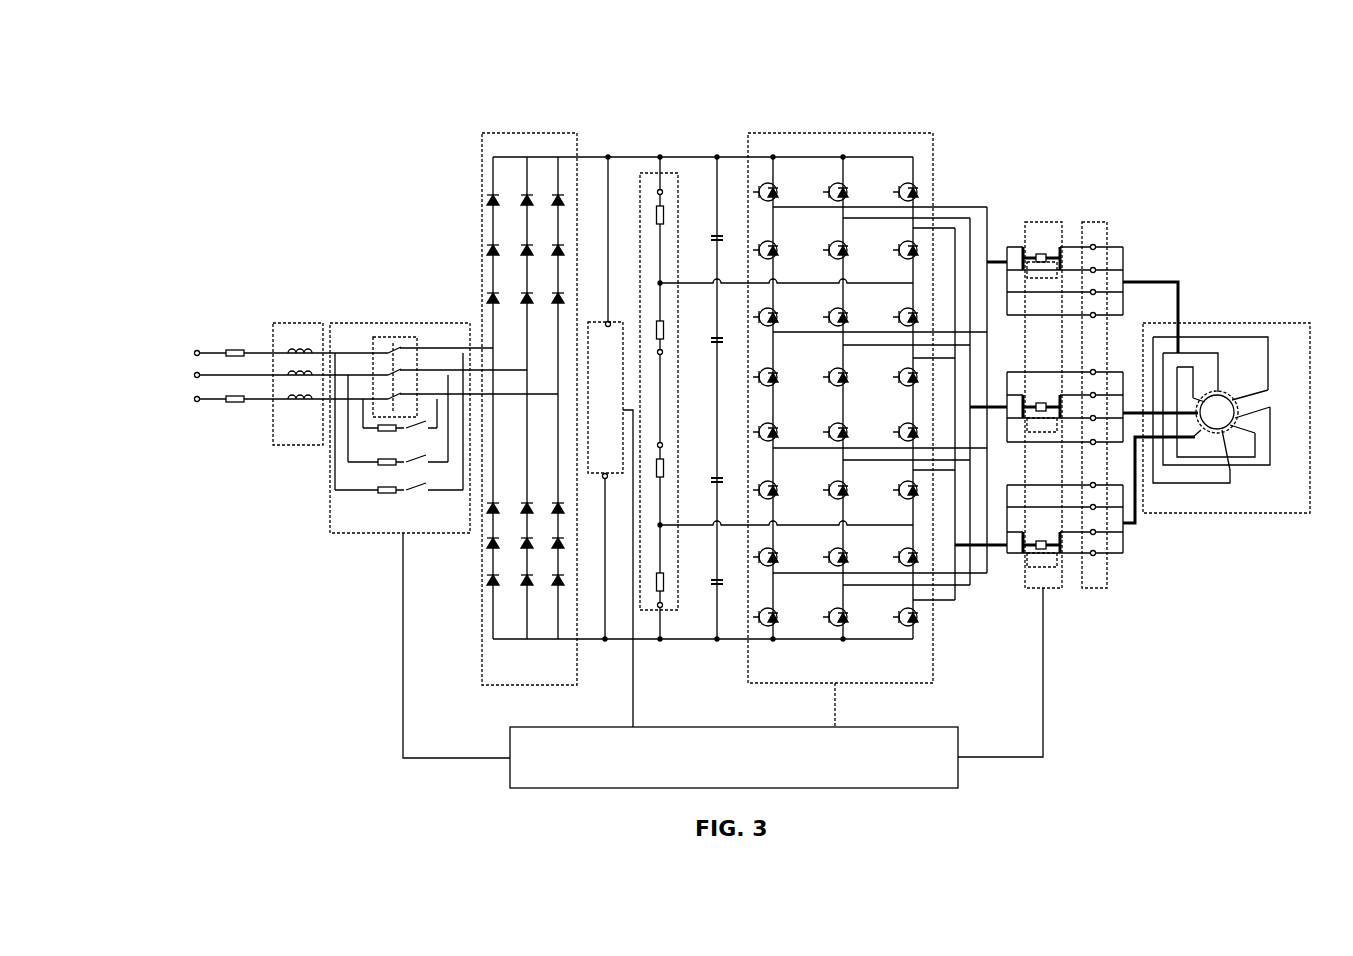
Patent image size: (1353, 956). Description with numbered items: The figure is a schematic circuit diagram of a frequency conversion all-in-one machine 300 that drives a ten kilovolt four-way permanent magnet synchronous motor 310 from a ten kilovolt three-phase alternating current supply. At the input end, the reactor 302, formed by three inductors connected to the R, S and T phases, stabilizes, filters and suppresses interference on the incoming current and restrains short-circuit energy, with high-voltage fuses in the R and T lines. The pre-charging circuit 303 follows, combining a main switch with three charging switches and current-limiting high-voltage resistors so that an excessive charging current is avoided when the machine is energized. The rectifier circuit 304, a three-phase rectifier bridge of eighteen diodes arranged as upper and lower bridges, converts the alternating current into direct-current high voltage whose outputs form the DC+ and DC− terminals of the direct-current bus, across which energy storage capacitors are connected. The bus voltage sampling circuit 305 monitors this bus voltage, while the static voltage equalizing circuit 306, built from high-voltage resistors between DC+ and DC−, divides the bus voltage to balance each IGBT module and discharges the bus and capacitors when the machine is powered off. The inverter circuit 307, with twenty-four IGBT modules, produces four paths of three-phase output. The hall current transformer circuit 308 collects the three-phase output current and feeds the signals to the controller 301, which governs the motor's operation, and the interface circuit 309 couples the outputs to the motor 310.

The frequency conversion all-in-one machine 300 is at (1232, 85).
The controller 301 is at (734, 757).
The reactor 302 is at (298, 384).
The pre-charging circuit 303 is at (420, 540).
The rectifier circuit 304 is at (696, 409).
The bus voltage sampling circuit 305 is at (610, 435).
The static voltage equalizing circuit 306 is at (670, 610).
The inverter circuit 307 is at (867, 430).
The hall current transformer circuit 308 is at (1055, 590).
The interface circuit 309 is at (1095, 590).
The 10 KV four-way permanent magnet synchronous motor 310 is at (1216, 402).